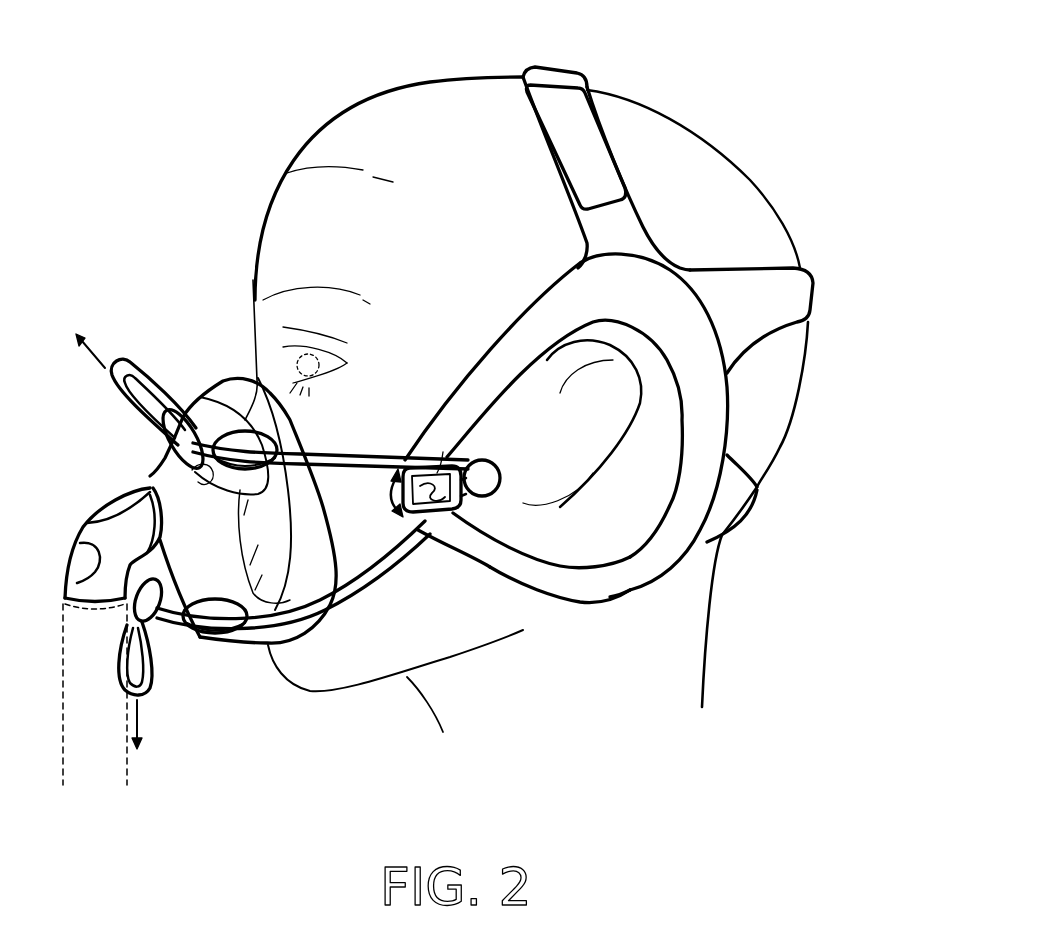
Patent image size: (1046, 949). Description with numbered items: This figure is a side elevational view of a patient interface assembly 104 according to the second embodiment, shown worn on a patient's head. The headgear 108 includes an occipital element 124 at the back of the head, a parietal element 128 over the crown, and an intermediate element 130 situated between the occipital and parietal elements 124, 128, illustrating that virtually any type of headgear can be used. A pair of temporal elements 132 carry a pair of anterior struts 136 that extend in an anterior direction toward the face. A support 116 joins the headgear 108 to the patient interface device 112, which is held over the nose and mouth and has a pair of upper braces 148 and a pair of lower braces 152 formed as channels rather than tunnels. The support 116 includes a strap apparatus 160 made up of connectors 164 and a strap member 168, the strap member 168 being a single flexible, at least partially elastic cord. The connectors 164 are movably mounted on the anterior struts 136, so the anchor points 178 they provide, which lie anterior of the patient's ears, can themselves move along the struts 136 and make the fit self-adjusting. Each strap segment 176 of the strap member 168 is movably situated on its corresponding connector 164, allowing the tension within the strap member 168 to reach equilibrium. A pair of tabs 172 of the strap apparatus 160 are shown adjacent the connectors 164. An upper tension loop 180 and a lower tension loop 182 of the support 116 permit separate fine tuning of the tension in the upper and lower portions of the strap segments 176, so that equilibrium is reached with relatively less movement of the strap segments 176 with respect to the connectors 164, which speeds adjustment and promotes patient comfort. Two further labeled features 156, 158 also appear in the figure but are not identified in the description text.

The patient interface assembly 104 is at (186, 92).
The headgear 108 is at (634, 217).
The patient interface device 112 is at (162, 488).
The support 116 is at (333, 443).
The occipital element 124 is at (742, 507).
The parietal element 128 is at (600, 130).
The intermediate element 130 is at (805, 294).
The temporal elements 132 is at (655, 570).
The anterior struts 136 is at (510, 320).
The upper braces 148 is at (247, 415).
The lower braces 152 is at (210, 600).
The upper strap end tab 156 is at (160, 460).
The lower strap end tab 158 is at (153, 637).
The strap apparatus 160 is at (345, 592).
The connectors 164 is at (417, 517).
The strap member 168 is at (380, 440).
The tabs 172 is at (497, 490).
The strap segment 176 is at (380, 570).
The anchor points 178 is at (430, 482).
The upper tension loop 180 is at (133, 360).
The lower tension loop 182 is at (142, 694).